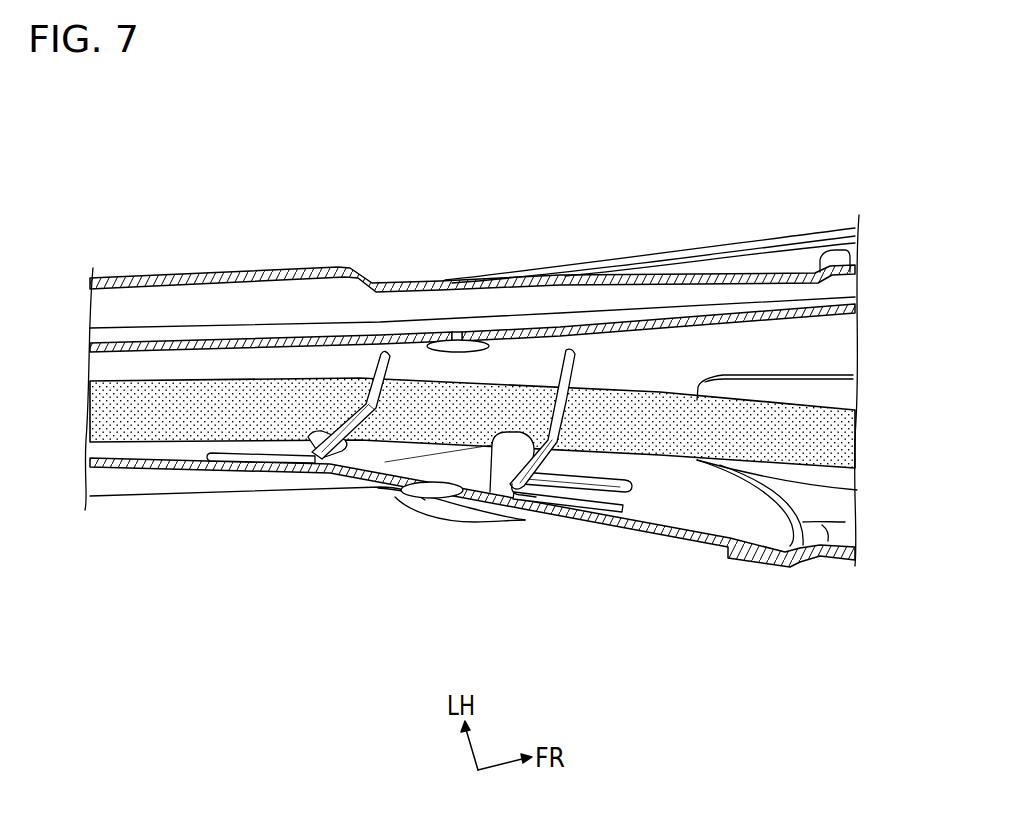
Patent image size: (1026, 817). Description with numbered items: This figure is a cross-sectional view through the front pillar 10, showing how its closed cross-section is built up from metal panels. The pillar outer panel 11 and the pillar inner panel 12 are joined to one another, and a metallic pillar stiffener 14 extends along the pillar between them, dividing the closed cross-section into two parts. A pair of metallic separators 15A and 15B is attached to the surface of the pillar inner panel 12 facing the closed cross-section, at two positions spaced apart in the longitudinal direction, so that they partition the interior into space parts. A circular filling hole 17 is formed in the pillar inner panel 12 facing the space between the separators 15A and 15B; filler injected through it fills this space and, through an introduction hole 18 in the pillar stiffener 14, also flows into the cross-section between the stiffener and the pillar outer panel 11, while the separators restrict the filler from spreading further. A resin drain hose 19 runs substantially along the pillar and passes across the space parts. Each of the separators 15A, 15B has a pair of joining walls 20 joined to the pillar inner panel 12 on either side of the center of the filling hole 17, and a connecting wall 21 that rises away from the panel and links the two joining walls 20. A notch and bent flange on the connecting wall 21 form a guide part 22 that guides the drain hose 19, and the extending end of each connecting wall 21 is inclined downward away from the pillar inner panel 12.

The front pillar 10 is at (496, 401).
The pillar outer panel 11 is at (578, 285).
The pillar inner panel 12 is at (651, 527).
The pillar stiffener 14 is at (530, 332).
The separator 15A is at (363, 382).
The separator 15B is at (578, 356).
The filling hole 17 is at (457, 497).
The introduction hole 18 is at (445, 347).
The drain hose 19 is at (830, 401).
The joining wall 20 is at (267, 461).
The connecting wall 21 is at (363, 420).
The guide part 22 is at (311, 442).